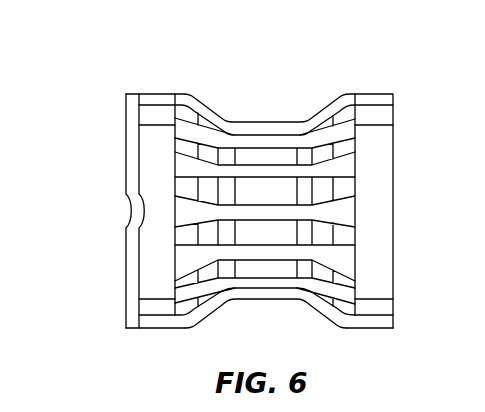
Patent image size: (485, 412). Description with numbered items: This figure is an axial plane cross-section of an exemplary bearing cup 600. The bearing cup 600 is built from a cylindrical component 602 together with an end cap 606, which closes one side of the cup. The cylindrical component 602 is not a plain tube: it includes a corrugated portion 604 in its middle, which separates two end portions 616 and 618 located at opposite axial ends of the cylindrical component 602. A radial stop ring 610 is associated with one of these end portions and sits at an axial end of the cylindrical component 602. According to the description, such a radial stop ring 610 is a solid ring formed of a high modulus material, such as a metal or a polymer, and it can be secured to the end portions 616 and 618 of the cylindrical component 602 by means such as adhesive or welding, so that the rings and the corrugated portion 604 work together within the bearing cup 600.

The bearing cup 600 is at (152, 67).
The cylindrical component 602 is at (346, 92).
The corrugated portion 604 is at (237, 120).
The end cap 606 is at (127, 143).
The radial stop ring 610 is at (142, 304).
The end portion 616 is at (360, 328).
The end portion 618 is at (147, 320).